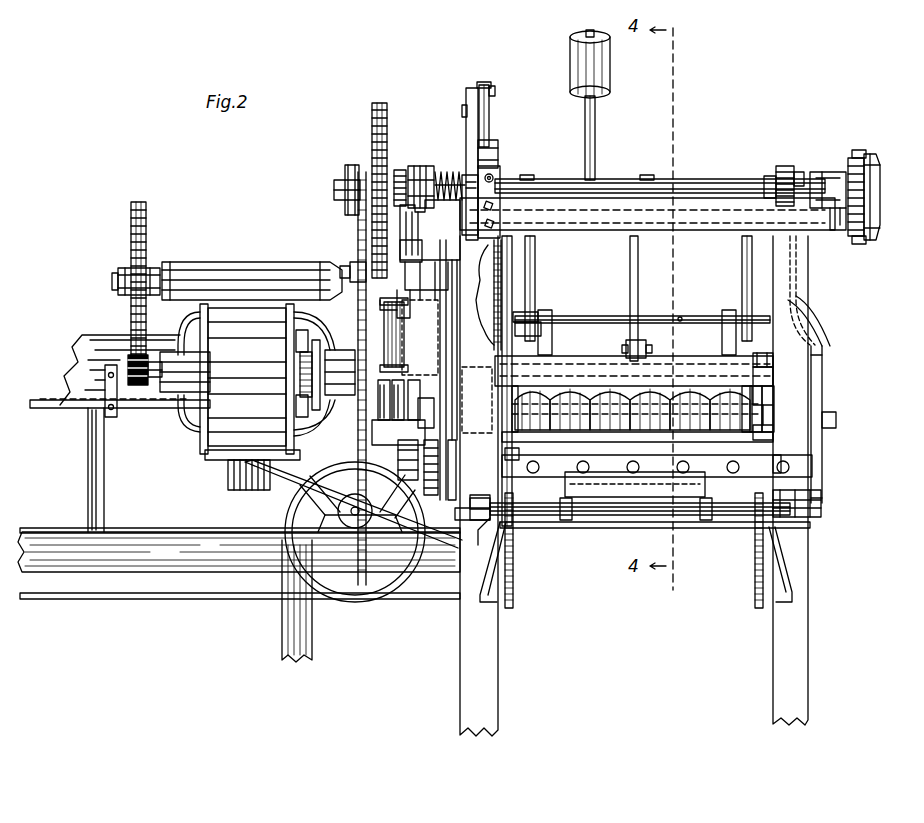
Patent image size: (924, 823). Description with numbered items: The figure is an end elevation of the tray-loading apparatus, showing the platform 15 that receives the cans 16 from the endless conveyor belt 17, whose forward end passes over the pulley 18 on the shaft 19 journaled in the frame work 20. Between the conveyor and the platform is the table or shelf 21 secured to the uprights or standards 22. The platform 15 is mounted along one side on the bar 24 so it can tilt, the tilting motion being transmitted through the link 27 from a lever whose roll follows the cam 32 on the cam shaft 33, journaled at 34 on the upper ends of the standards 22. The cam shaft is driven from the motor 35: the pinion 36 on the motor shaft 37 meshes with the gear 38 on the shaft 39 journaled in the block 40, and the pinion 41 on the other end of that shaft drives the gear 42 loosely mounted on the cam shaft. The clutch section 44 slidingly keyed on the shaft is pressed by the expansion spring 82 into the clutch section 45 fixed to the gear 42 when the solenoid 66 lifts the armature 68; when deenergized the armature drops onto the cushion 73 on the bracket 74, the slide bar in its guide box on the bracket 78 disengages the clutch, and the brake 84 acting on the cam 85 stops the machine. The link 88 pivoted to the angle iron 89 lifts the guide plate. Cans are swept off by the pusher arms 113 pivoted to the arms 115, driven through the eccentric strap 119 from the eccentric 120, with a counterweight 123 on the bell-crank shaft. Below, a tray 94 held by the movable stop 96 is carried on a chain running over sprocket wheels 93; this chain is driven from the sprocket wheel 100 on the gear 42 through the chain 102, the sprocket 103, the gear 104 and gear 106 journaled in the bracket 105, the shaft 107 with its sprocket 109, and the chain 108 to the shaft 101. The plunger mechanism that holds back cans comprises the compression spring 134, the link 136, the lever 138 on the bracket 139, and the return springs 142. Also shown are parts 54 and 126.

The platform 15 is at (840, 446).
The cans 16 is at (724, 426).
The endless conveyor belt 17 is at (40, 400).
The pulley 18 is at (352, 582).
The shaft 19 is at (338, 512).
The frame work 20 is at (187, 552).
The table or shelf 21 is at (508, 444).
The uprights or standards 22 is at (484, 658).
The bar 24 is at (776, 412).
The link 27 is at (830, 332).
The cam 32 is at (783, 170).
The cam shaft 33 is at (710, 183).
The journal 34 is at (834, 220).
The motor 35 is at (257, 397).
The pinion 36 is at (128, 365).
The motor shaft 37 is at (155, 378).
The gear 38 is at (131, 215).
The shaft 39 is at (118, 280).
The block 40 is at (200, 268).
The pinion 41 is at (360, 268).
The gear 42 is at (372, 118).
The clutch section 44 is at (424, 166).
The clutch section 45 is at (398, 170).
The block 54 is at (764, 350).
The solenoid 66 is at (396, 312).
The armature 68 is at (422, 292).
The cushion 73 is at (430, 405).
The bracket 74 is at (432, 415).
The bracket 78 is at (430, 231).
The expansion spring 82 is at (450, 172).
The brake 84 is at (500, 185).
The cam 85 is at (497, 150).
The link 88 is at (638, 278).
The angle iron 89 is at (646, 342).
The sprocket wheels 93 is at (525, 588).
The tray 94 is at (614, 470).
The movable stop 96 is at (685, 486).
The sprocket wheel 100 is at (350, 180).
The shaft 101 is at (548, 525).
The chain 102 is at (358, 222).
The sprocket 103 is at (352, 472).
The gear 104 is at (395, 460).
The bracket 105 is at (440, 478).
The gear 106 is at (395, 412).
The shaft 107 is at (410, 336).
The chain 108 is at (476, 522).
The sprocket 109 is at (468, 470).
The pusher arms 113 is at (552, 336).
The arms 115 is at (536, 270).
The eccentric strap 119 is at (853, 158).
The eccentric 120 is at (870, 188).
The counterweight 123 is at (611, 72).
The stop 126 is at (781, 463).
The compression spring 134 is at (514, 285).
The link 136 is at (489, 104).
The lever 138 is at (492, 74).
The bracket 139 is at (467, 92).
The springs 142 is at (548, 310).